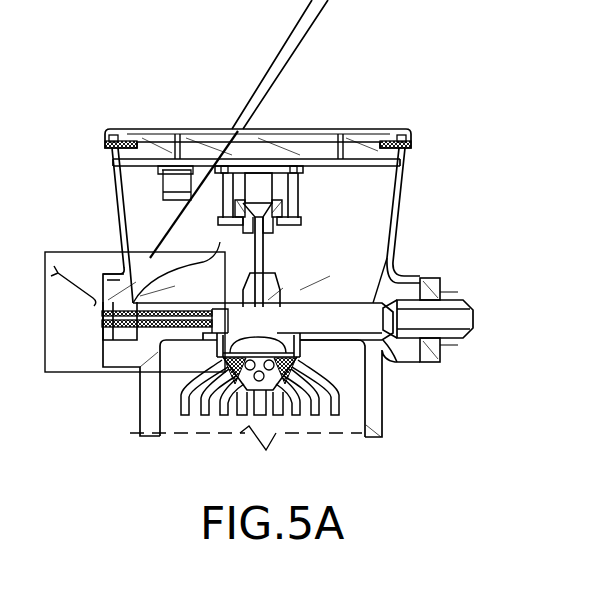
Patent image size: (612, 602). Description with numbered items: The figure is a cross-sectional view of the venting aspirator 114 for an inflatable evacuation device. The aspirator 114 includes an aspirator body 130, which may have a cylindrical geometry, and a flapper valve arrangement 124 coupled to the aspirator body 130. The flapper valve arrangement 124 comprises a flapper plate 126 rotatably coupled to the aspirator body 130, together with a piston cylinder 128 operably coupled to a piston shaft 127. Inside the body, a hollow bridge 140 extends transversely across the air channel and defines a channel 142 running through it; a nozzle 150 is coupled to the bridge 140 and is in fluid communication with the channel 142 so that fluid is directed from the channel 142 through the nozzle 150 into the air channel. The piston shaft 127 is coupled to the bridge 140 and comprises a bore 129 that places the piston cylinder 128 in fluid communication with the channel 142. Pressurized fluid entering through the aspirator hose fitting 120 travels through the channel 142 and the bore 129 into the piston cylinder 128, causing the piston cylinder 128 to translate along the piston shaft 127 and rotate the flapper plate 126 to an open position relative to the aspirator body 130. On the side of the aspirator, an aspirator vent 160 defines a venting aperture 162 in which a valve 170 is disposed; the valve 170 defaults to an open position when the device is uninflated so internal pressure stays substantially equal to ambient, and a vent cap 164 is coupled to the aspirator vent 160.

The aspirator 114 is at (382, 106).
The aspirator hose fitting 120 is at (477, 304).
The flapper valve arrangement 124 is at (360, 208).
The flapper plate 126 is at (203, 128).
The piston shaft 127 is at (269, 246).
The piston cylinder 128 is at (286, 196).
The bore 129 is at (254, 246).
The aspirator body 130 is at (406, 190).
The bridge 140 is at (367, 304).
The channel 142 is at (398, 364).
The nozzle 150 is at (309, 407).
The aspirator vent 160 is at (106, 262).
The venting aperture 162 is at (118, 362).
The vent cap 164 is at (67, 260).
The valve 170 is at (175, 307).